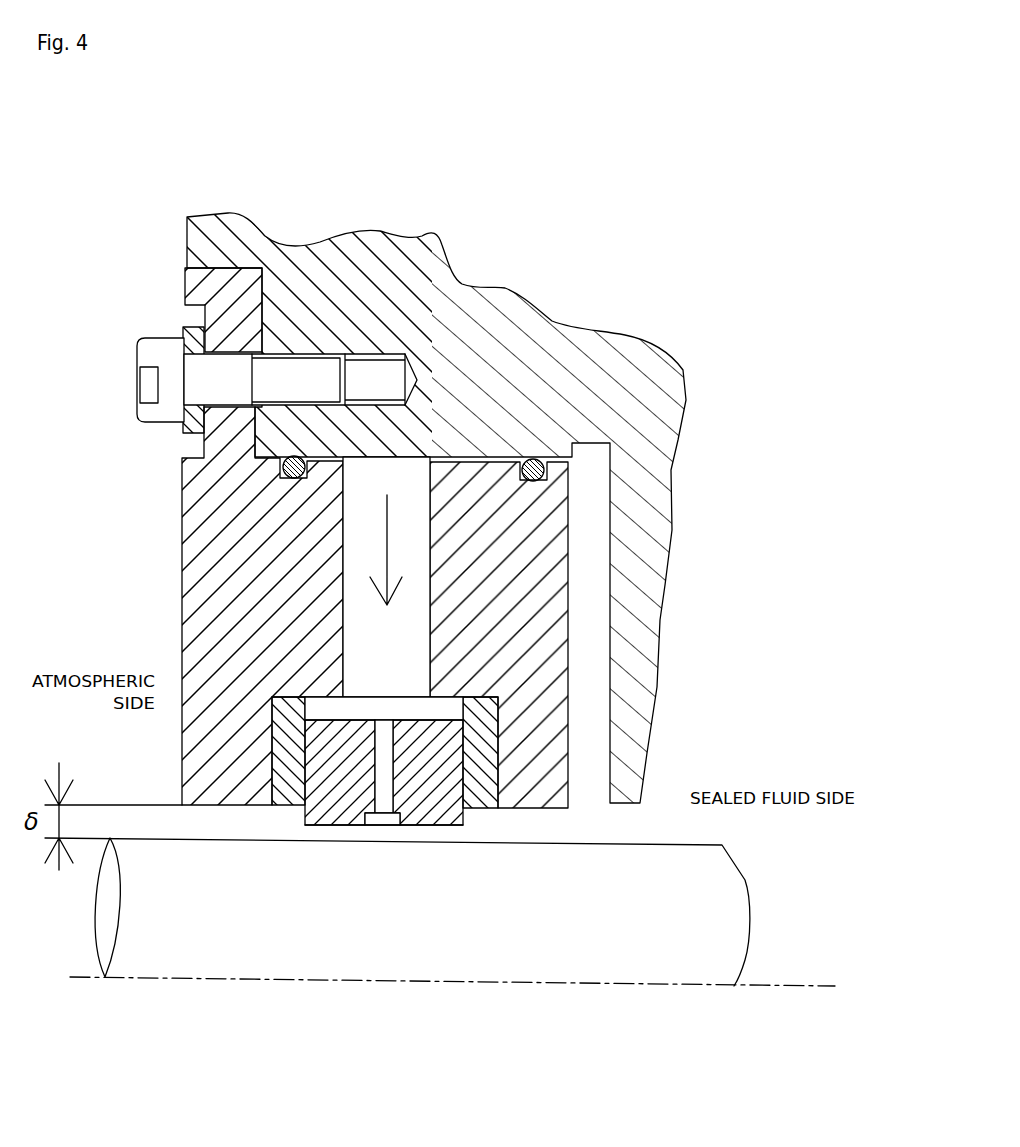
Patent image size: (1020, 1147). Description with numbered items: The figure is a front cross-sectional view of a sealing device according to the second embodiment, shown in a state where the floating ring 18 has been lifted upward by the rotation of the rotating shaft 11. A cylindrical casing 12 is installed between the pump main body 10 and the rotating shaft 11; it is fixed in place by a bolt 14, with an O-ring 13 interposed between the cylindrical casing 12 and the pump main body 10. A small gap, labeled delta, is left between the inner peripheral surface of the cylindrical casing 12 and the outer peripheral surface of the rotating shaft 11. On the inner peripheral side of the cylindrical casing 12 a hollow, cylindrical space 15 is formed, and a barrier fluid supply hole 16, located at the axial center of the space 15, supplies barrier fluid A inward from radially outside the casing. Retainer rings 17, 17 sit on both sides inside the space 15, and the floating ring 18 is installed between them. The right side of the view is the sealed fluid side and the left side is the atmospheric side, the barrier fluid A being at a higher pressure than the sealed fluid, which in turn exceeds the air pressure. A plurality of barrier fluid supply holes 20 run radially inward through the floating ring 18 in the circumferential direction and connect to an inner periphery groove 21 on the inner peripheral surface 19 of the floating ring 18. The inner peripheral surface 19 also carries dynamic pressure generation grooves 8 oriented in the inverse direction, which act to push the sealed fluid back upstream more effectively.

The dynamic pressure generation grooves 8 is at (430, 827).
The pump main body 10 is at (478, 312).
The rotating shaft 11 is at (722, 918).
The cylindrical casing 12 is at (193, 560).
The O-ring 13 is at (533, 460).
The bolt 14 is at (155, 350).
The hollow, cylindrical space 15 is at (440, 713).
The barrier fluid supply hole 16 is at (417, 618).
The retainer rings 17 is at (277, 806).
The floating ring 18 is at (333, 817).
The inner peripheral surface 19 is at (383, 822).
The barrier fluid supply holes 20 is at (390, 723).
The inner periphery groove 21 is at (386, 824).